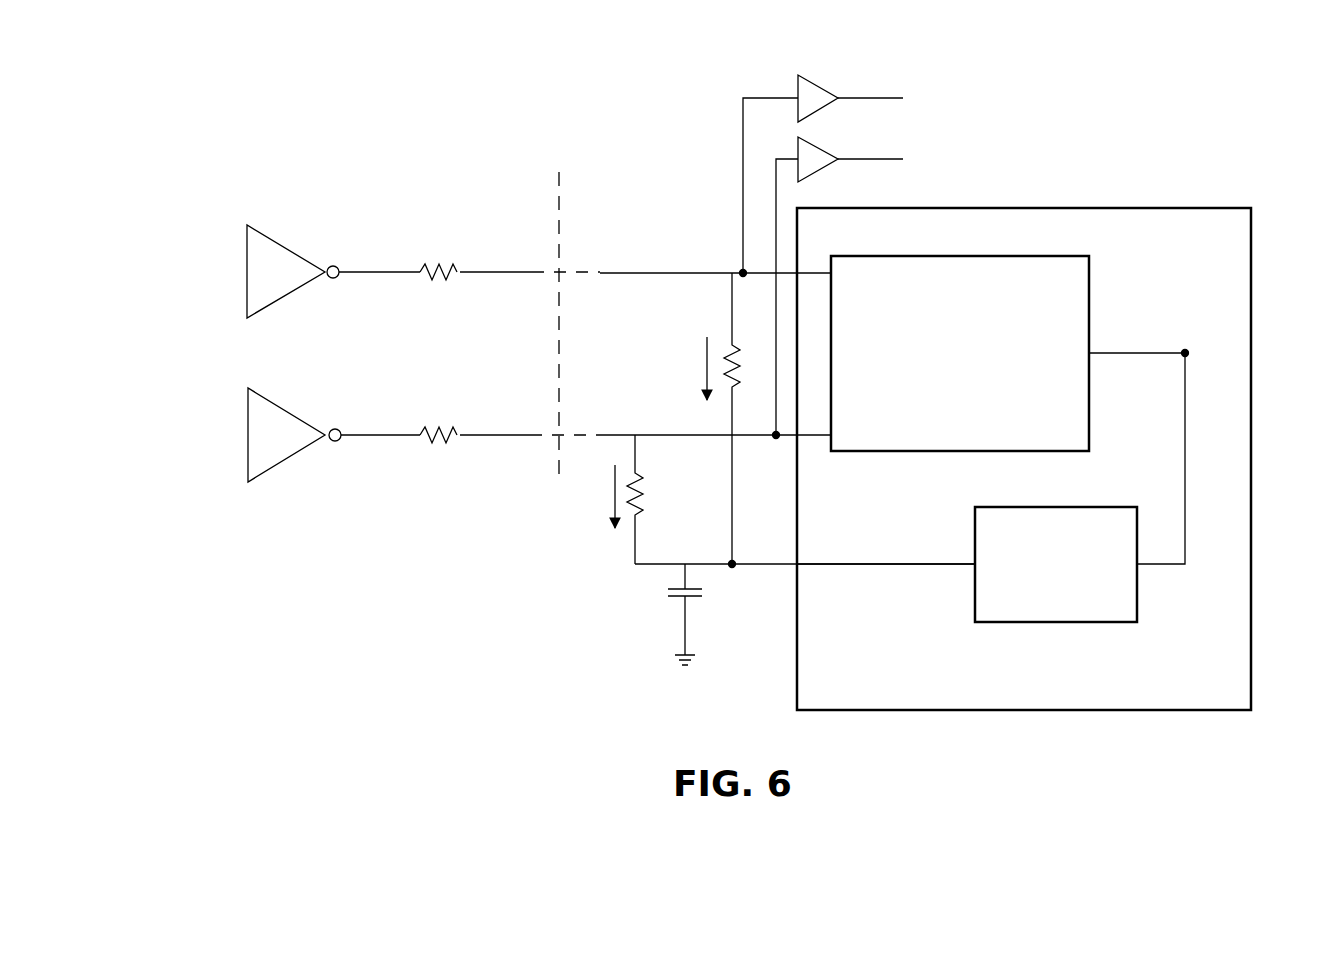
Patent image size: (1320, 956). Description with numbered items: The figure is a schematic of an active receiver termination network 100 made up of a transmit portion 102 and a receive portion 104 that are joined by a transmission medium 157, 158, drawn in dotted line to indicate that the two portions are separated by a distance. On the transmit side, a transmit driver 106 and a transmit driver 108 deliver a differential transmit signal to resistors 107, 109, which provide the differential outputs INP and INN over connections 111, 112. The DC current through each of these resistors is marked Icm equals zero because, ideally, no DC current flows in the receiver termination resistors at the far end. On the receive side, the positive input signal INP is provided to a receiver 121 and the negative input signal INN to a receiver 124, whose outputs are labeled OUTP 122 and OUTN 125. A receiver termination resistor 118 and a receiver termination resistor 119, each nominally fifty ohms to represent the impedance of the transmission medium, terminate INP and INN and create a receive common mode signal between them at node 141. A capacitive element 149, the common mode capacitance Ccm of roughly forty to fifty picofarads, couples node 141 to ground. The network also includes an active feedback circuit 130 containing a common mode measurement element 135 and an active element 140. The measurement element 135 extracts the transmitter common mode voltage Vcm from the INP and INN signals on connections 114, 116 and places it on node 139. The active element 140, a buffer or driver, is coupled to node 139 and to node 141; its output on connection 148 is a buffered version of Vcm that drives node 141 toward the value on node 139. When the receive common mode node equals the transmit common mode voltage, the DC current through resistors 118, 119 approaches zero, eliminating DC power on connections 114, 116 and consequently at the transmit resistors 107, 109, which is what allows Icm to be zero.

The active receiver termination network 100 is at (212, 118).
The transmit portion 102 is at (408, 140).
The receive portion 104 is at (652, 123).
The transmit driver 106 is at (270, 238).
The resistor 107 is at (440, 268).
The transmit driver 108 is at (272, 402).
The resistor 109 is at (437, 432).
The connection 111 is at (512, 273).
The connection 112 is at (508, 436).
The connection 114 is at (612, 274).
The connection 116 is at (685, 433).
The receiver termination resistor 118 is at (740, 378).
The receiver termination resistor 119 is at (648, 497).
The receiver 121 is at (820, 88).
The OUTP output 122 is at (890, 99).
The receiver 124 is at (820, 150).
The OUTN output 125 is at (890, 160).
The active feedback circuit 130 is at (1073, 207).
The common mode measurement element 135 is at (960, 353).
The common mode voltage node 139 is at (1188, 350).
The active element 140 is at (1056, 564).
The common mode signal node 141 is at (735, 566).
The connection 148 is at (955, 562).
The capacitive element 149 is at (690, 600).
The transmission medium 157 is at (570, 276).
The transmission medium 158 is at (545, 434).